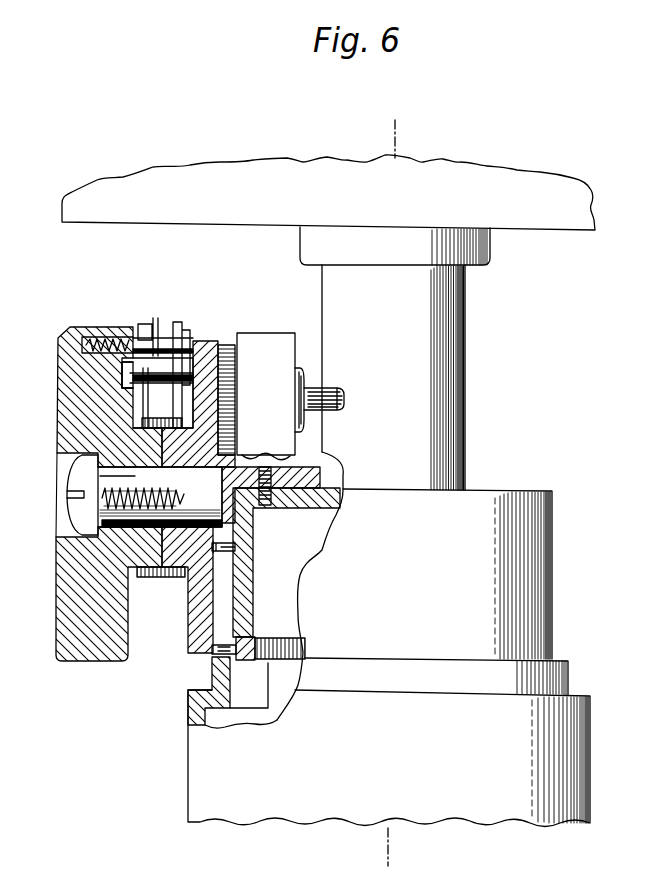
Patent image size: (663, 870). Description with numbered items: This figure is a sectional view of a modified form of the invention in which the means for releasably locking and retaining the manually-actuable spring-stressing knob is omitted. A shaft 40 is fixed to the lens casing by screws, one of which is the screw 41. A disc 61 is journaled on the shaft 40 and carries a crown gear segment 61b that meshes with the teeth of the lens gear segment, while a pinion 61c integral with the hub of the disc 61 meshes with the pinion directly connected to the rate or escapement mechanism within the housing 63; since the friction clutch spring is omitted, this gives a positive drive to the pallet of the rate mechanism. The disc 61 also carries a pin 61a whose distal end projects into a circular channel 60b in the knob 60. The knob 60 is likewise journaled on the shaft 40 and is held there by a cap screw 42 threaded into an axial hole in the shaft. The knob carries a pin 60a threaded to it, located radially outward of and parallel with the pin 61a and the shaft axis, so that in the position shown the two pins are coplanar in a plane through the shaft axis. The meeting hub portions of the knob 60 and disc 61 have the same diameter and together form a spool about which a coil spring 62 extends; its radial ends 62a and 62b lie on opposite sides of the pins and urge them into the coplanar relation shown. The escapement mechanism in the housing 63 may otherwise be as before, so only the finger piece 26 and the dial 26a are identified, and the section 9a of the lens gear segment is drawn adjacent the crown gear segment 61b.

The knob 60 is at (96, 662).
The pin 60a is at (151, 348).
The circular channel 60b is at (124, 372).
The disc 61 is at (205, 628).
The pin 61a is at (160, 375).
The crown gear segment 61b is at (218, 651).
The pinion 61c is at (232, 552).
The coil spring 62 is at (161, 579).
The radial end 62a is at (140, 336).
The radial end 62b is at (181, 332).
The housing 63 is at (258, 352).
The finger piece 26 is at (345, 398).
The dial 26a is at (304, 380).
The shaft 40 is at (135, 477).
The screw 41 is at (270, 504).
The cap screw 42 is at (90, 516).
The ring 9a is at (276, 650).